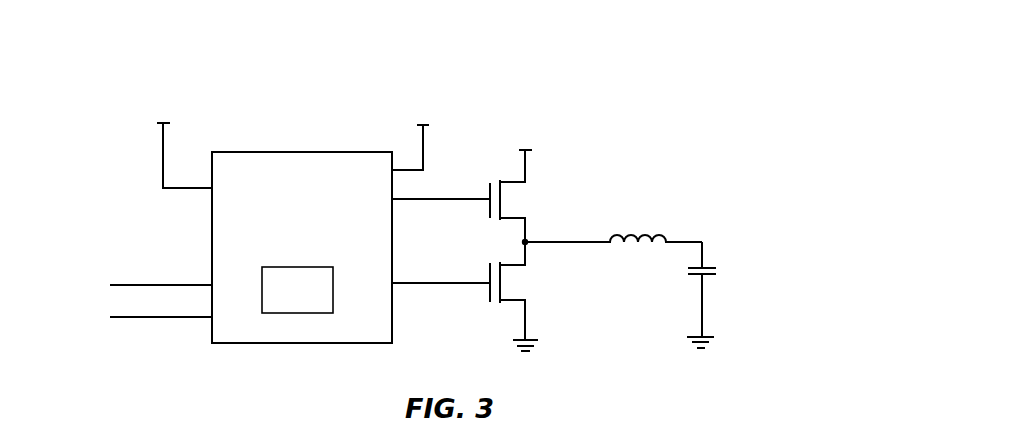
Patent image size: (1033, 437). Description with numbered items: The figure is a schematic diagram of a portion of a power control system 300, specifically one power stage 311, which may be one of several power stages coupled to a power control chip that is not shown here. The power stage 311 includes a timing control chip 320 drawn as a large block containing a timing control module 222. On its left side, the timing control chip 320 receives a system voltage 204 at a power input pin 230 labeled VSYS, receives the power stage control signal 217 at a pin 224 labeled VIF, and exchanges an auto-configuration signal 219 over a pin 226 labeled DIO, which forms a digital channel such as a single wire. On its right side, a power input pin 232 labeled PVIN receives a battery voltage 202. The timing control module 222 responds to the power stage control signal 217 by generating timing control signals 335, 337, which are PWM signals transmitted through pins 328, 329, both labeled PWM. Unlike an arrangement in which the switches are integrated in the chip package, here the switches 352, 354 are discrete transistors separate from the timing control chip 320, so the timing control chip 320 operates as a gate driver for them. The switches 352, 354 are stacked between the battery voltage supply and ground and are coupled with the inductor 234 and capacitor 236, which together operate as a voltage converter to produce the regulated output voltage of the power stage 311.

The power control system 300 is at (476, 38).
The timing control chip 320 is at (308, 152).
The system voltage 204 is at (162, 150).
The power input pin 230 is at (237, 182).
The power input pin 232 is at (340, 168).
The pin 328 is at (357, 207).
The pin 329 is at (367, 277).
The pin 224 is at (232, 273).
The pin 226 is at (248, 317).
The timing control module 222 is at (297, 290).
The power stage control signal 217 is at (160, 283).
The auto-configuration signal 219 is at (162, 320).
The battery voltage 202 is at (423, 150).
The timing control signal 335 is at (442, 200).
The timing control signal 337 is at (440, 283).
The switch 352 is at (513, 180).
The switch 354 is at (515, 302).
The power stage 311 is at (582, 158).
The inductor 234 is at (632, 235).
The capacitor 236 is at (712, 267).